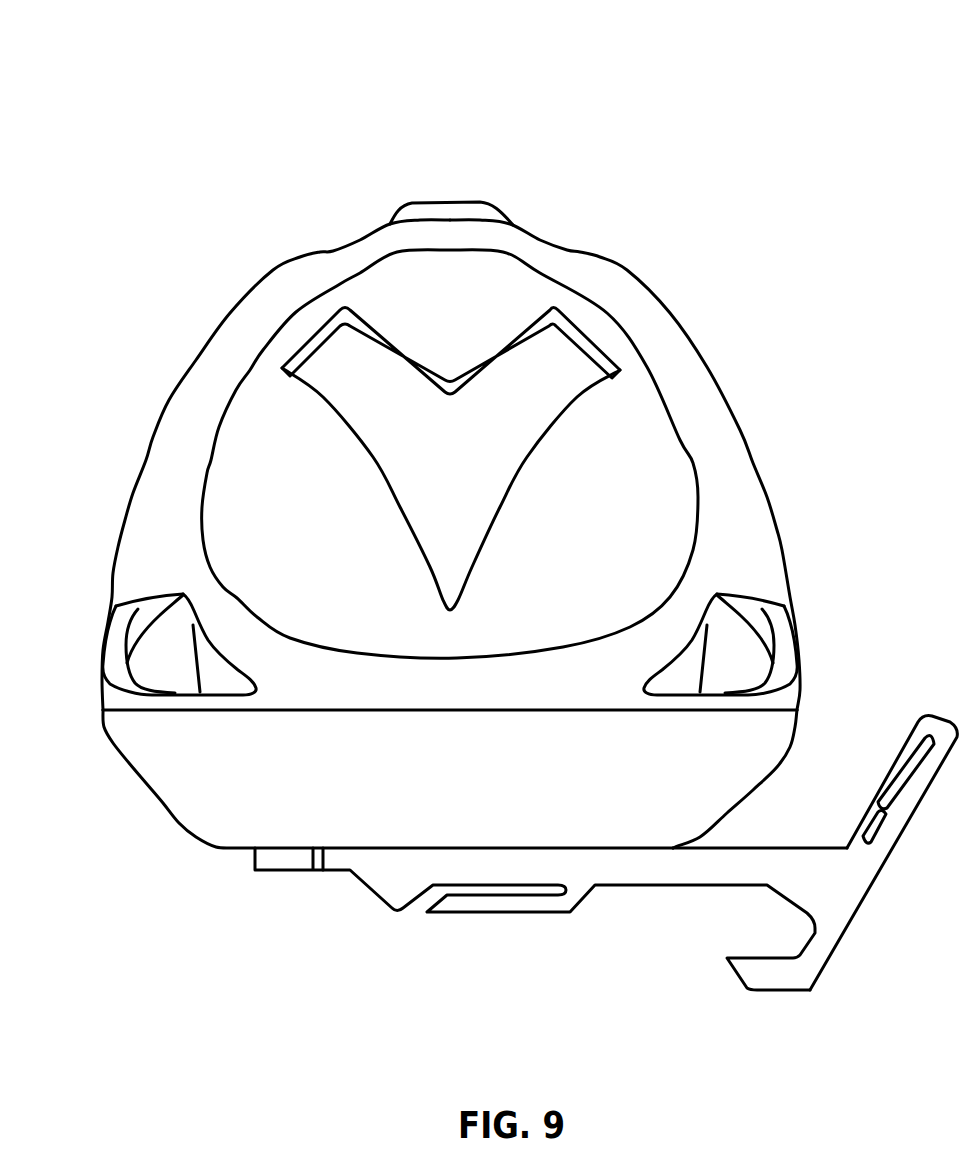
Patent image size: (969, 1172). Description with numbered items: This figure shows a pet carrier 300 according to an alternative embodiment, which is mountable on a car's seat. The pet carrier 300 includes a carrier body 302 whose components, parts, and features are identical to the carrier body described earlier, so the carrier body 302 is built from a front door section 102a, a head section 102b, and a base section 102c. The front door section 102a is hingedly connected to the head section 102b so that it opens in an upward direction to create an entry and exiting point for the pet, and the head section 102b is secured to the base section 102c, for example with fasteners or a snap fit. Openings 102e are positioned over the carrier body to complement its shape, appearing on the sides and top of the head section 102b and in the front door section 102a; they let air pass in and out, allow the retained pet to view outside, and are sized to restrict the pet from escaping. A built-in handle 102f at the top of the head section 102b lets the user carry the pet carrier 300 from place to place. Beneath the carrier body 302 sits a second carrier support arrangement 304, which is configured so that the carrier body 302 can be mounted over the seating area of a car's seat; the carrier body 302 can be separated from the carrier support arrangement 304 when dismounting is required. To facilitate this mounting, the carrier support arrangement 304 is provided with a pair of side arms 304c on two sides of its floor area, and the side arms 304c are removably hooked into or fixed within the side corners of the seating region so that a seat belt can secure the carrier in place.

The pet carrier 300 is at (770, 82).
The carrier body 302 is at (729, 383).
The carrier support arrangement 304 is at (413, 918).
The side arms 304c is at (830, 890).
The front door section 102a is at (673, 462).
The head section 102b is at (735, 535).
The base section 102c is at (161, 767).
The openings 102e is at (341, 339).
The handle 102f is at (468, 205).